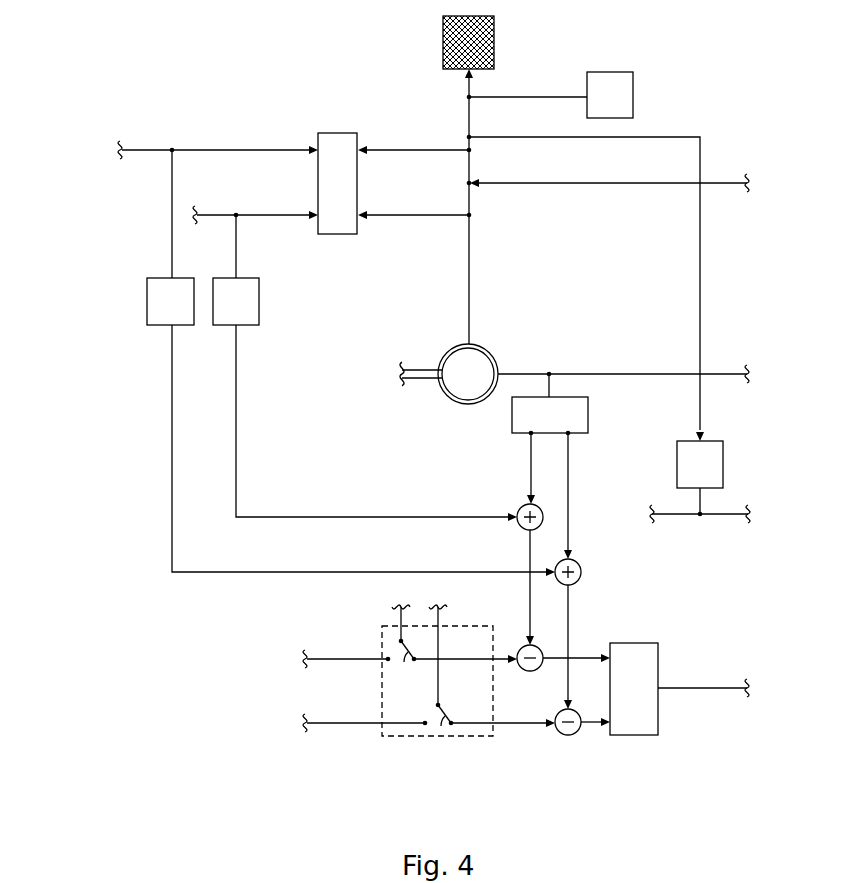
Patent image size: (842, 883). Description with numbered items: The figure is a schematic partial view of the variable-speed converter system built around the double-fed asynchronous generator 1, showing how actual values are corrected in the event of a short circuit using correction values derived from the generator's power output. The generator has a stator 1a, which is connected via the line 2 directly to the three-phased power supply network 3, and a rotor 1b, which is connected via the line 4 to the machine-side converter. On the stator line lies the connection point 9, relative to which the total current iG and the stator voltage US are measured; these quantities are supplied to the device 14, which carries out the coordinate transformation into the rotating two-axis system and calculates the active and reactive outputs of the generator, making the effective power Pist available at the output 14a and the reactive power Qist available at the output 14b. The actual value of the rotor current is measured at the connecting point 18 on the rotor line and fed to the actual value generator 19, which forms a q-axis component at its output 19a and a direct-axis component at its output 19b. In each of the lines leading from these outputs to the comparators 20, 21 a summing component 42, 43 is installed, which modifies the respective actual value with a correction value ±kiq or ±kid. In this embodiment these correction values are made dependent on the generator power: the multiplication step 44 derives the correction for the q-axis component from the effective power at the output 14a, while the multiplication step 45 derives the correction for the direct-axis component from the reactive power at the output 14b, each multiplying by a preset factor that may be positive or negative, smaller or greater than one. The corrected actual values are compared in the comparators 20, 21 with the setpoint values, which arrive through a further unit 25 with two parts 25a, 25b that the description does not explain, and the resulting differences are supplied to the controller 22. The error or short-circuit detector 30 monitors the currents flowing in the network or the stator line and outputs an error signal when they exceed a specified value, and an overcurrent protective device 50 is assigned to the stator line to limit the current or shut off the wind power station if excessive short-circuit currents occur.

The asynchronous generator 1 is at (461, 376).
The stator 1a is at (493, 357).
The rotor 1b is at (457, 350).
The line 2 is at (471, 261).
The three-phased power supply network 3 is at (492, 31).
The line 4 is at (625, 373).
The connection point 9 is at (471, 184).
The device 14 is at (347, 141).
The output 14a is at (318, 217).
The output 14b is at (317, 148).
The connecting point 18 is at (552, 372).
The actual value generator 19 is at (577, 412).
The output 19a is at (529, 435).
The output 19b is at (571, 438).
The comparator 20 is at (536, 650).
The comparator 21 is at (567, 736).
The controller 22 is at (635, 651).
The switching unit 25 is at (429, 695).
The first switch 25a is at (403, 650).
The second switch 25b is at (451, 736).
The error or short-circuit detector 30 is at (720, 469).
The component 42 is at (520, 508).
The component 43 is at (582, 571).
The multiplication step 44 is at (250, 291).
The multiplication step 45 is at (156, 290).
The overcurrent protective device 50 is at (628, 90).